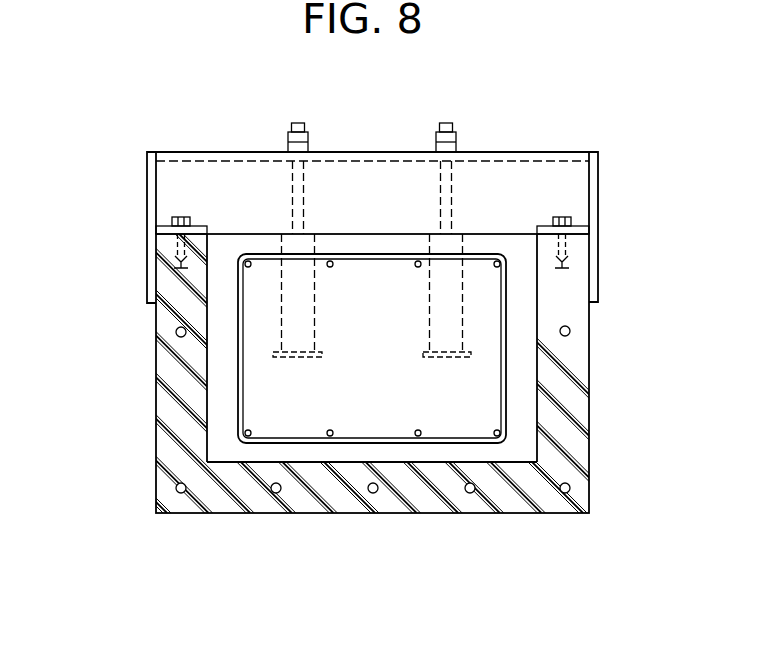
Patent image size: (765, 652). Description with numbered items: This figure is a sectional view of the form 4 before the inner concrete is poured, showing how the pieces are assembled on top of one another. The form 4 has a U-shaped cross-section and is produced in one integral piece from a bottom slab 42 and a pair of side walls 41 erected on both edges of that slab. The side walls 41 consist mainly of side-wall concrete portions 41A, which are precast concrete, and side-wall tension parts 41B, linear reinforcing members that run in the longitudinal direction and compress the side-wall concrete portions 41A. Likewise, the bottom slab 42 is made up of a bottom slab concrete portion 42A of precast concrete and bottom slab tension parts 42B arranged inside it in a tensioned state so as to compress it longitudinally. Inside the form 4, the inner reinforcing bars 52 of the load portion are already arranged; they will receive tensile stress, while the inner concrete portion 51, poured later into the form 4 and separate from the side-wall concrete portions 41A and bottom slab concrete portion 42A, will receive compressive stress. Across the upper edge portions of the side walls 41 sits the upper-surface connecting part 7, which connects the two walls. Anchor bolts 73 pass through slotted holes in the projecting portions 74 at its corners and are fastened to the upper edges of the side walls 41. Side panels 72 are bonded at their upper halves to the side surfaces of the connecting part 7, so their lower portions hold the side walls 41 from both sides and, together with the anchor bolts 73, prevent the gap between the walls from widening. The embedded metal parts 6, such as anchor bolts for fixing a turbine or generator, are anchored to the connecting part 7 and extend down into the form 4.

The form 4 is at (356, 436).
The side walls 41 is at (356, 373).
The side-wall concrete portions 41A is at (178, 385).
The side-wall tension parts 41B is at (176, 332).
The bottom slab 42 is at (356, 436).
The bottom slab concrete portion 42A is at (414, 490).
The bottom slab tension parts 42B is at (469, 494).
The inner concrete portion 51 is at (366, 354).
The inner reinforcing bars 52 is at (506, 313).
The embedded metal parts 6 is at (305, 125).
The upper-surface connecting part 7 is at (366, 188).
The side panels 72 is at (147, 265).
The anchor bolts 73 is at (180, 215).
The projecting portions 74 is at (162, 230).